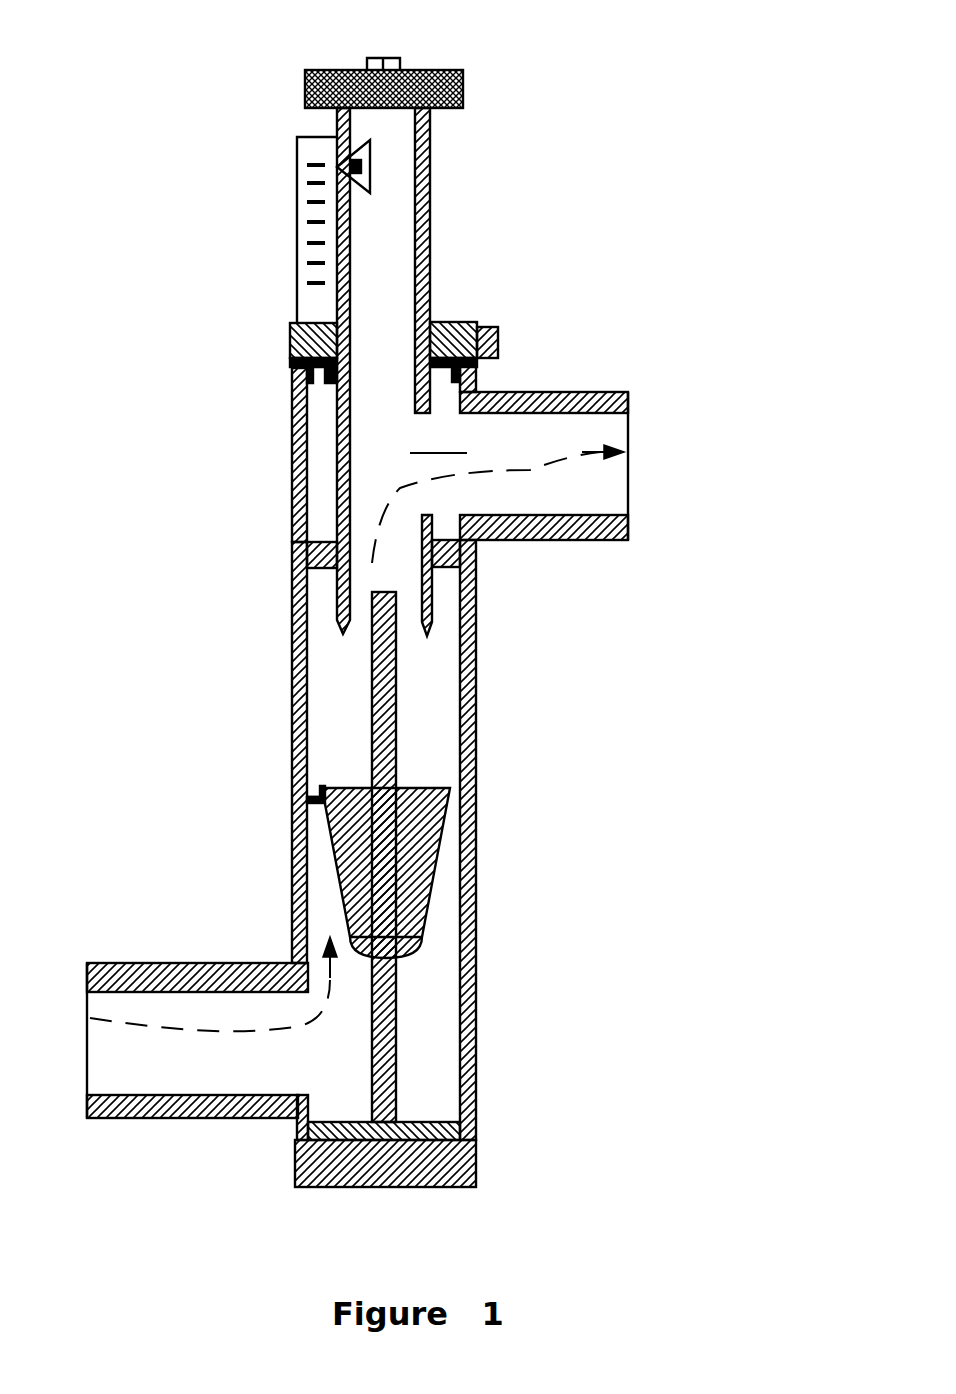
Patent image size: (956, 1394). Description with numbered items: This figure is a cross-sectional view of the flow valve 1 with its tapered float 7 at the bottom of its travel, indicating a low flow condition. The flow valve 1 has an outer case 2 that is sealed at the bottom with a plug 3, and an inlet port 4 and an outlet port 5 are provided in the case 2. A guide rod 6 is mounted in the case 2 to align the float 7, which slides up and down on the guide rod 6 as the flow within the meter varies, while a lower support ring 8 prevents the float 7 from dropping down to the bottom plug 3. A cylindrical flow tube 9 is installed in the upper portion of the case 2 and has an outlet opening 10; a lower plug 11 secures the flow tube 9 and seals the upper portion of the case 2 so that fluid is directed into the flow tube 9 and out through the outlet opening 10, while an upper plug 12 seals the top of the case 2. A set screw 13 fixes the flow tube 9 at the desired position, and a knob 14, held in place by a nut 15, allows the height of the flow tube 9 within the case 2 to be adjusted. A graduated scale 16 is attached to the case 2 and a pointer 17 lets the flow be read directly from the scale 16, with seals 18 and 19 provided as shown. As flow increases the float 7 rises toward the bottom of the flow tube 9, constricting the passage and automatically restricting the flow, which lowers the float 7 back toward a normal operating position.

The flow valve 1 is at (103, 335).
The outer case 2 is at (477, 753).
The plug 3 is at (292, 1170).
The inlet port 4 is at (140, 1067).
The outlet port 5 is at (582, 483).
The guide rod 6 is at (393, 707).
The float 7 is at (425, 863).
The lower support ring 8 is at (315, 783).
The flow tube 9 is at (435, 240).
The outlet opening 10 is at (498, 503).
The lower plug 11 is at (442, 568).
The upper plug 12 is at (300, 415).
The set screw 13 is at (498, 328).
The knob 14 is at (463, 70).
The nut 15 is at (377, 53).
The graduated scale 16 is at (300, 275).
The pointer 17 is at (337, 128).
The seal 18 is at (293, 362).
The seal 19 is at (478, 1138).